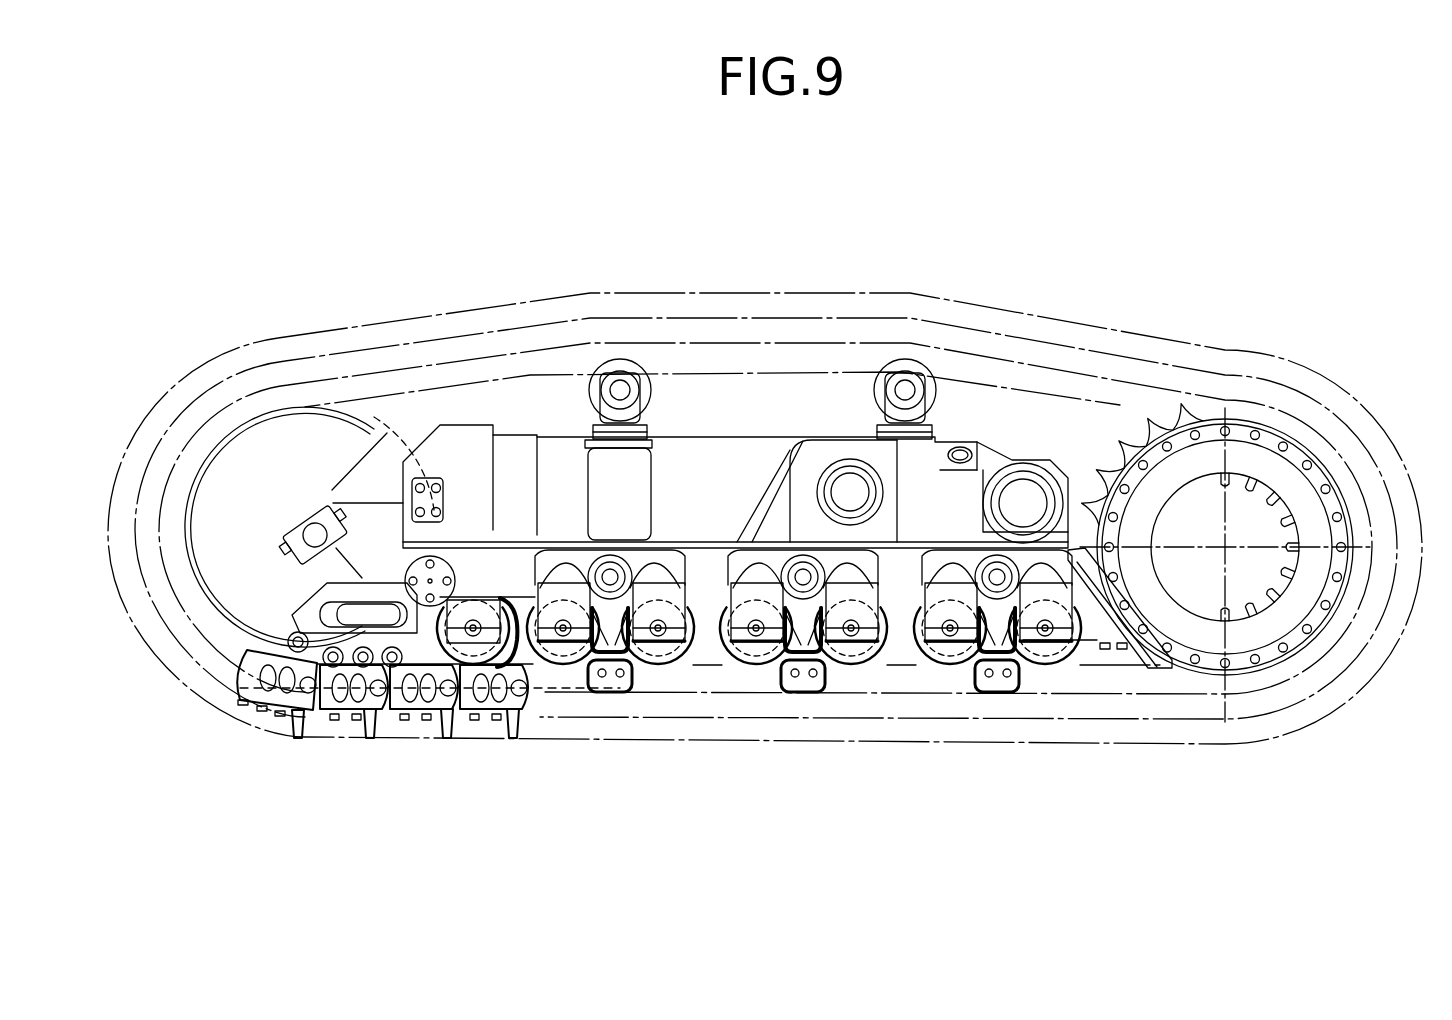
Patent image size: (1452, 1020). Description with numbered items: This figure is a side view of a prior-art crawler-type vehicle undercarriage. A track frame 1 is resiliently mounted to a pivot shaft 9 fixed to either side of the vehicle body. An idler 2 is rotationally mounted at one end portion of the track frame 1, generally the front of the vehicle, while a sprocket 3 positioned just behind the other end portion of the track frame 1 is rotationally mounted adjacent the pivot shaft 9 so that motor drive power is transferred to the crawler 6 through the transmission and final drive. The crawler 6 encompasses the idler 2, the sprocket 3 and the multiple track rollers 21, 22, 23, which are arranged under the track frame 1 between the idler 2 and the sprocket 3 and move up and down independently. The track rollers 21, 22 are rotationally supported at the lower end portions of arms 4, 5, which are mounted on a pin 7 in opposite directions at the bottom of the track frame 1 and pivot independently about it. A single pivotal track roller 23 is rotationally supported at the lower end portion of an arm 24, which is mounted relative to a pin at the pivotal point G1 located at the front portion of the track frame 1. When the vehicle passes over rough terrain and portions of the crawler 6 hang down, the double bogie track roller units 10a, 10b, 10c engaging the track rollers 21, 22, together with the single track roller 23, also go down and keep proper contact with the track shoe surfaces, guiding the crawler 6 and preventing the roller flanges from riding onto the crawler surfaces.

The track frame 1 is at (760, 437).
The idler 2 is at (378, 415).
The sprocket 3 is at (1140, 436).
The arm 4 is at (753, 615).
The arm 5 is at (870, 617).
The crawler 6 is at (749, 292).
The pin 7 is at (803, 585).
The pivot shaft 9 is at (1025, 500).
The double bogie track roller unit 10a is at (662, 680).
The double bogie track roller unit 10b is at (835, 680).
The double bogie track roller unit 10c is at (966, 690).
The track roller 21 is at (565, 670).
The track roller 22 is at (680, 668).
The single pivotal track roller 23 is at (442, 640).
The arm 24 is at (520, 678).
The pivotal point G1 is at (432, 572).